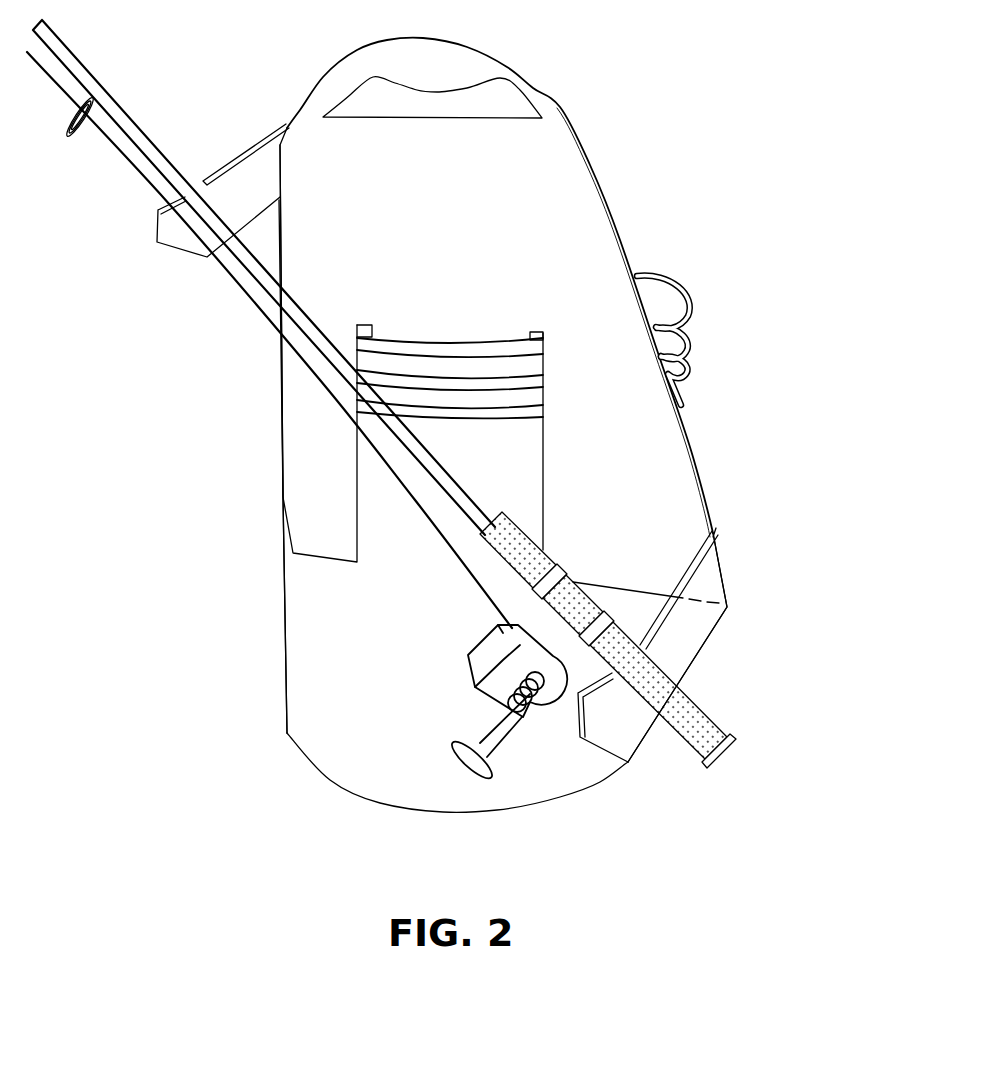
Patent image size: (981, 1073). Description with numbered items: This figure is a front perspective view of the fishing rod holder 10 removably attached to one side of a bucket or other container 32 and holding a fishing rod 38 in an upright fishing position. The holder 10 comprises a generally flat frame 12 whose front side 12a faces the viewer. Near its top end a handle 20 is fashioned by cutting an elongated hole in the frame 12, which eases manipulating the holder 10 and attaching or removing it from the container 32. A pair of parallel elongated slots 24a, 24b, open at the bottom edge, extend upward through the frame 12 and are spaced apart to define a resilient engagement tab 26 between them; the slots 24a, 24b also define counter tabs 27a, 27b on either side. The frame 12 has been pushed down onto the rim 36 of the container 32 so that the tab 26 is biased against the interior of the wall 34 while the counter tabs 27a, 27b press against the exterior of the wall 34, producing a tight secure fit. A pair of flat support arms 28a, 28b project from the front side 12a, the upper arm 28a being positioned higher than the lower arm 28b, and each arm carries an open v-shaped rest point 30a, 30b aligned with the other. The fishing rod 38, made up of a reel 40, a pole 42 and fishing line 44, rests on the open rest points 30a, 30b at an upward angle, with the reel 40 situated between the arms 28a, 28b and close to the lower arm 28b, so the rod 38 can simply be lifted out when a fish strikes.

The fishing rod holder 10 is at (584, 69).
The frame 12 is at (590, 160).
The front side 12a is at (521, 211).
The handle 20 is at (413, 57).
The elongated slot 24a is at (367, 324).
The elongated slot 24b is at (537, 333).
The engagement tab 26 is at (447, 337).
The counter tab 27a is at (340, 467).
The counter tab 27b is at (634, 477).
The support arm 28a is at (260, 166).
The support arm 28b is at (707, 570).
The open rest point 30a is at (205, 183).
The open rest point 30b is at (647, 652).
The container 32 is at (285, 627).
The wall 34 is at (351, 659).
The rim 36 is at (488, 350).
The fishing rod 38 is at (510, 512).
The reel 40 is at (475, 687).
The pole 42 is at (452, 483).
The fishing line 44 is at (448, 543).